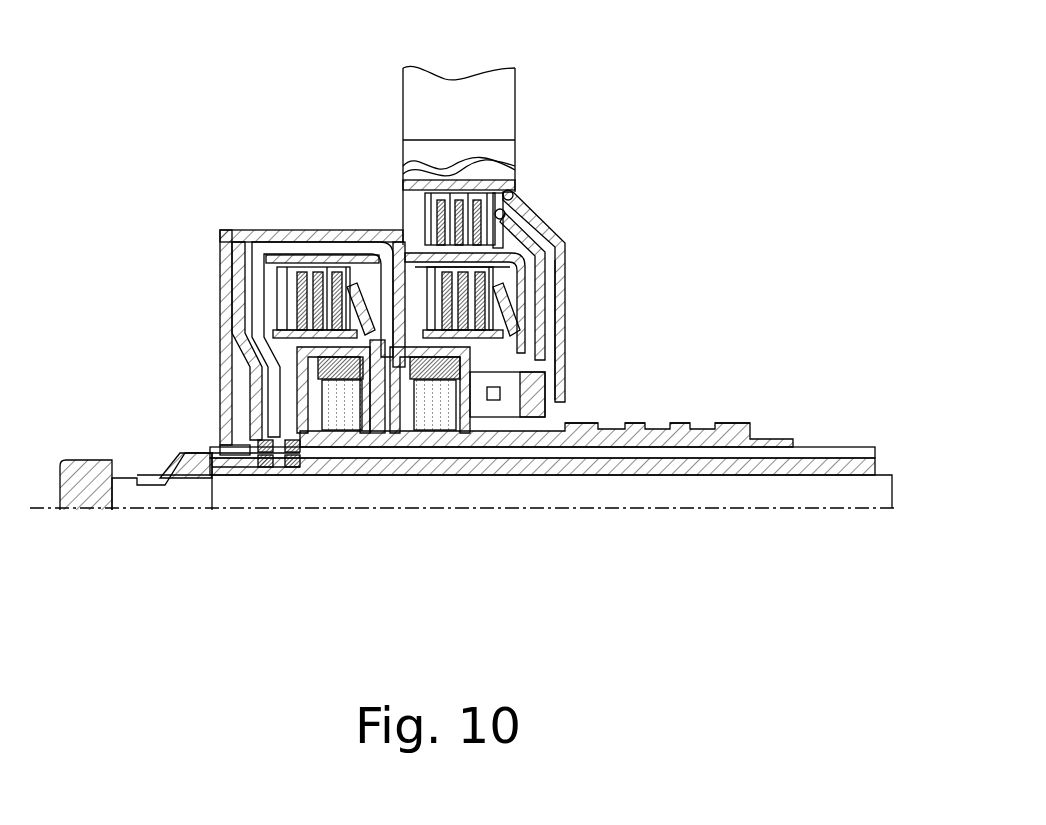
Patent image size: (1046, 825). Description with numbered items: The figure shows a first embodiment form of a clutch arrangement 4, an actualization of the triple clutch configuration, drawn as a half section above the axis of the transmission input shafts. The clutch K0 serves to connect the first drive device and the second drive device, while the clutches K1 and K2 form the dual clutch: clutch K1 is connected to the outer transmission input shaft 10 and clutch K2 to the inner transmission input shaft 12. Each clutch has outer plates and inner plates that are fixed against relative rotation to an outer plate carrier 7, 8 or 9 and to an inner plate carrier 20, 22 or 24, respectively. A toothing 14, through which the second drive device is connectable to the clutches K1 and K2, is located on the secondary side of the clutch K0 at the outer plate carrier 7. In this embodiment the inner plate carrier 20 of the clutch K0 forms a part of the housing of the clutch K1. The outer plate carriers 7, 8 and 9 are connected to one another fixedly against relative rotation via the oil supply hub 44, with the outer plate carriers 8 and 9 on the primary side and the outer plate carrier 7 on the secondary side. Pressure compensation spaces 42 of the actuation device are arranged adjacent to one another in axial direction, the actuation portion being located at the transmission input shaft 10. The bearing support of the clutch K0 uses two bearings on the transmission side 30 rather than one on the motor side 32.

The clutch arrangement 4 is at (692, 161).
The outer plate carrier 7 is at (567, 278).
The outer plate carrier 8 is at (530, 301).
The outer plate carrier 9 is at (286, 258).
The transmission input shaft 10 is at (690, 462).
The transmission input shaft 12 is at (793, 498).
The toothing 14 is at (402, 170).
The inner plate carrier 20 is at (372, 236).
The inner plate carrier 22 is at (310, 247).
The inner plate carrier 24 is at (266, 391).
The transmission side 30 is at (744, 284).
The motor side 32 is at (108, 376).
The pressure compensation spaces 42 is at (492, 420).
The oil supply hub 44 is at (735, 433).
The clutch K0 is at (525, 190).
The clutch K1 is at (242, 250).
The clutch K2 is at (566, 241).